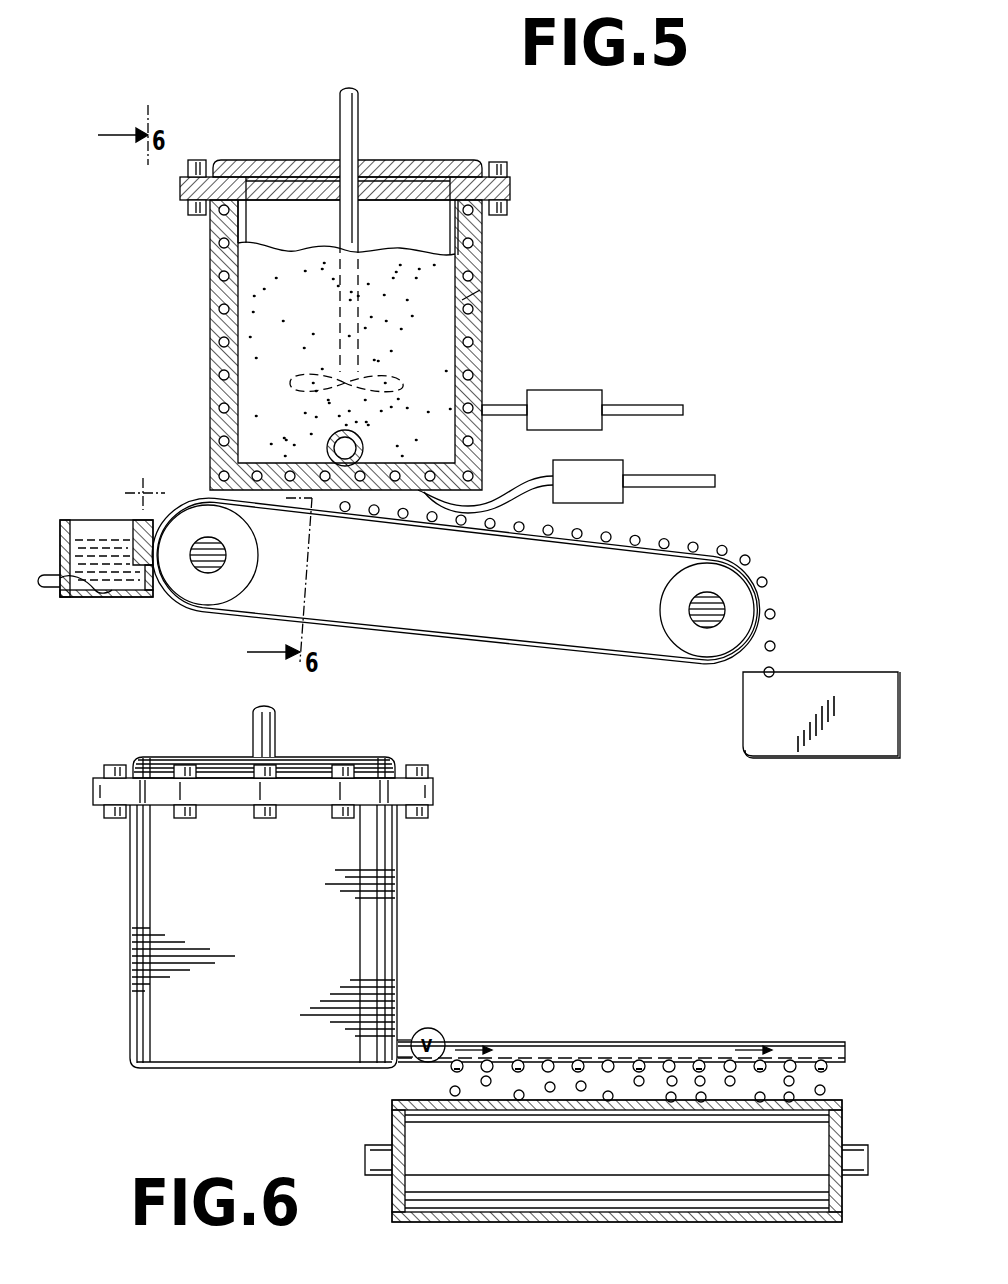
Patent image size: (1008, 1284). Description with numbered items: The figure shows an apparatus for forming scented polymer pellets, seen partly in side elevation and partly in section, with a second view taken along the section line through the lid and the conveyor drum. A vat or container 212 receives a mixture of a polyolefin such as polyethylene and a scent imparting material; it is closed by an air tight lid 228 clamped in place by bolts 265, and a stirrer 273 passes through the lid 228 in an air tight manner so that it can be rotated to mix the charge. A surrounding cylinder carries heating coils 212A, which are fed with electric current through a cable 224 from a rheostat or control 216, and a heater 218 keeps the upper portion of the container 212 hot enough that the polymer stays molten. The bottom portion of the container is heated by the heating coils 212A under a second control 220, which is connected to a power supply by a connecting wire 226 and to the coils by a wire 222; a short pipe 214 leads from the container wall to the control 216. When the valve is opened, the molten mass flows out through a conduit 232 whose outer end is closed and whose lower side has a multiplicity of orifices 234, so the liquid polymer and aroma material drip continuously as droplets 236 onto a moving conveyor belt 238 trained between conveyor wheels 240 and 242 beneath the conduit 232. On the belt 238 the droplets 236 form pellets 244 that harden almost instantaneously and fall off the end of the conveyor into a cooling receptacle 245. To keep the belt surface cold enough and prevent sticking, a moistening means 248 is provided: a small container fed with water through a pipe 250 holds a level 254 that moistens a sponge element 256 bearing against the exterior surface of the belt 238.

In FIG. 5, the container 212 is at (202, 358).
In FIG. 6, the container 212 is at (125, 968).
In FIG. 5, the heating coils 212A is at (480, 298).
In FIG. 5, the inlet pipe 214 is at (500, 404).
In FIG. 5, the control 216 is at (565, 396).
In FIG. 5, the heater 218 is at (360, 452).
In FIG. 5, the control 220 is at (612, 480).
In FIG. 5, the wire 222 is at (493, 499).
In FIG. 5, the cable 224 is at (640, 404).
In FIG. 5, the connecting wire 226 is at (668, 474).
In FIG. 5, the lid 228 is at (406, 162).
In FIG. 6, the lid 228 is at (207, 766).
In FIG. 6, the conduit 232 is at (651, 1044).
In FIG. 6, the orifices 234 is at (518, 1060).
In FIG. 6, the droplets 236 is at (553, 1084).
In FIG. 5, the conveyor belt 238 is at (412, 527).
In FIG. 6, the conveyor belt 238 is at (394, 1104).
In FIG. 5, the conveyor wheel 240 is at (248, 562).
In FIG. 5, the conveyor wheel 242 is at (672, 606).
In FIG. 6, the conveyor wheel 242 is at (652, 1157).
In FIG. 5, the pellets 244 is at (768, 584).
In FIG. 5, the collection container 245 is at (770, 744).
In FIG. 5, the moistening means 248 is at (60, 520).
In FIG. 5, the feed pipe 250 is at (62, 592).
In FIG. 5, the level 254 is at (118, 586).
In FIG. 5, the sponge element 256 is at (140, 520).
In FIG. 5, the bolts 265 is at (190, 200).
In FIG. 6, the bolts 265 is at (110, 765).
In FIG. 5, the stirrer 273 is at (340, 99).
In FIG. 6, the stirrer 273 is at (275, 737).